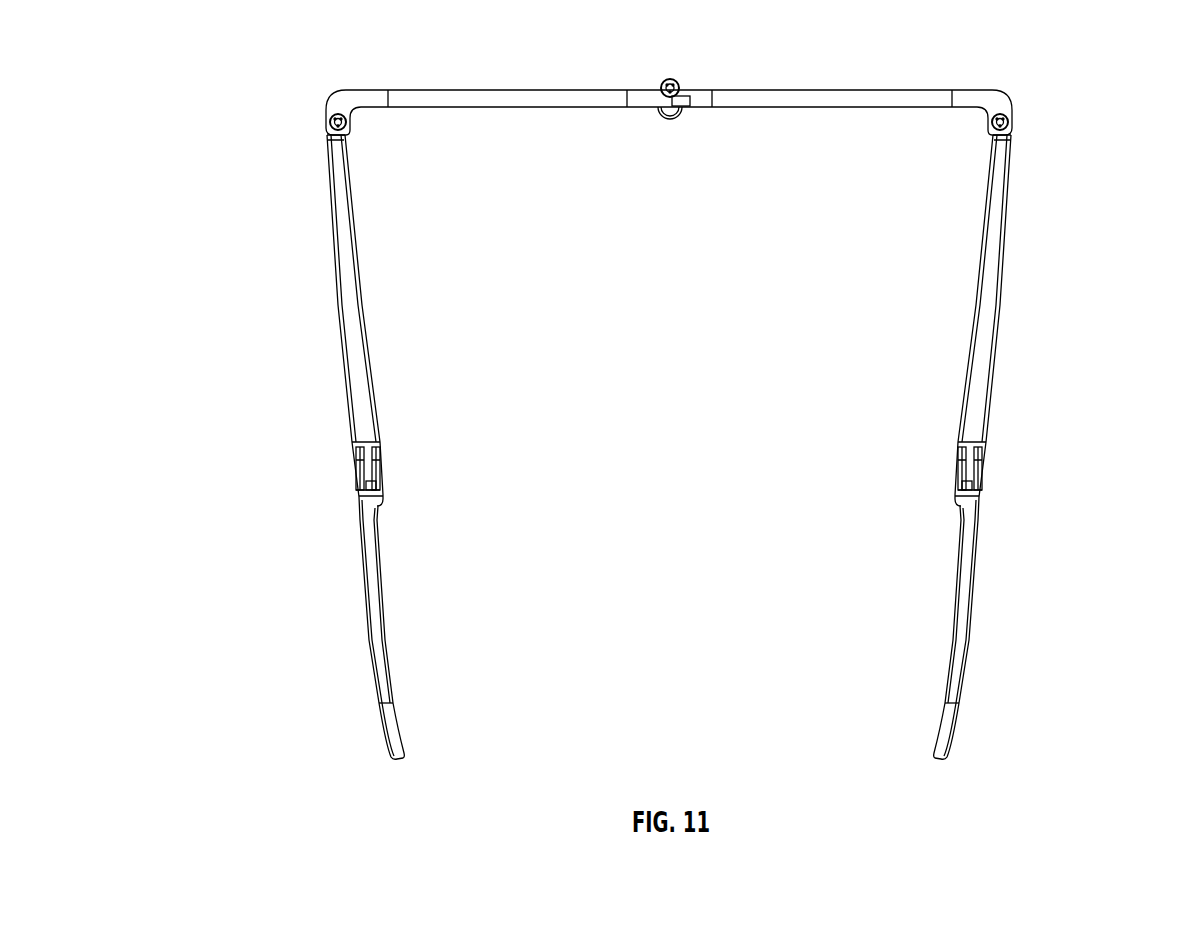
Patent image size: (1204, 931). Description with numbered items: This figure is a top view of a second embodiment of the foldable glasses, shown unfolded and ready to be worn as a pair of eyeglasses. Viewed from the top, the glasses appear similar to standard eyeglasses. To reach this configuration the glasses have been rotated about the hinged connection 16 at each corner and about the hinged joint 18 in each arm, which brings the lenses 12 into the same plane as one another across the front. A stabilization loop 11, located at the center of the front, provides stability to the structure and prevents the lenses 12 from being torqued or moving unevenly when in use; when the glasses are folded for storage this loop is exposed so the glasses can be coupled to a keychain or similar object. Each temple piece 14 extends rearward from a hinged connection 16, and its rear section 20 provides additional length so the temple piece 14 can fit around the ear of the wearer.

The stabilization loop 11 is at (670, 124).
The lenses 12 is at (523, 82).
The temple piece 14 is at (349, 373).
The hinged connection 16 is at (333, 122).
The hinged joint 18 is at (983, 468).
The rear section 20 is at (383, 719).